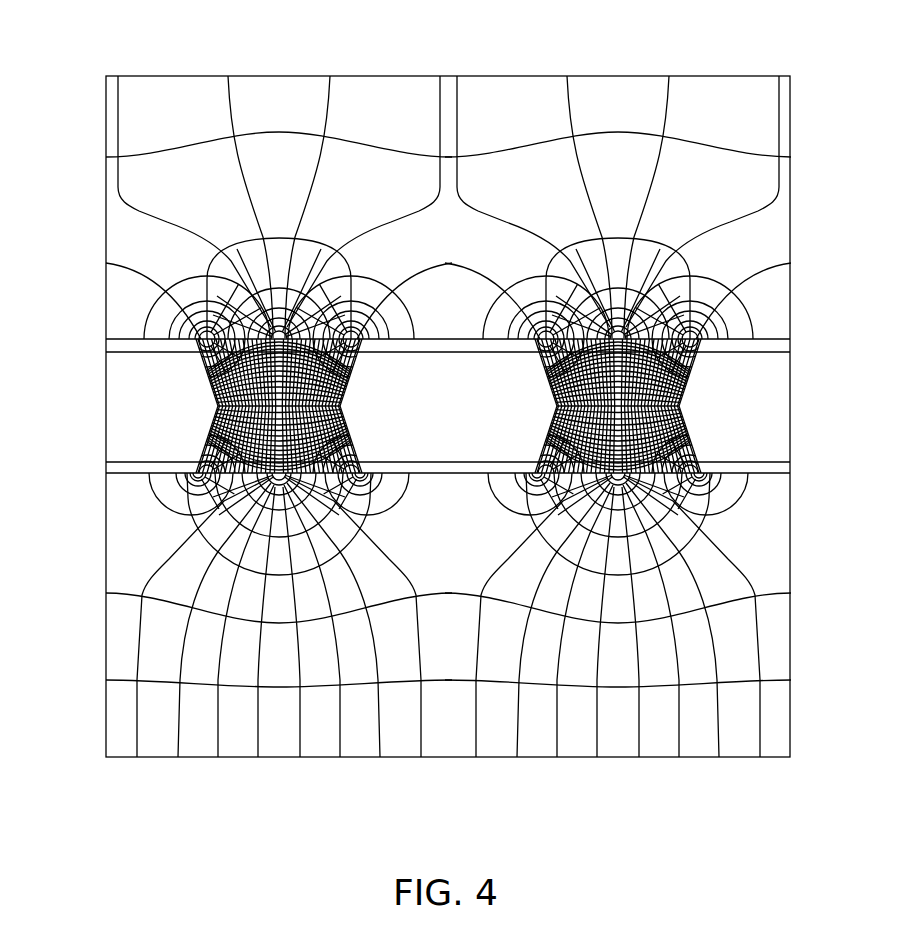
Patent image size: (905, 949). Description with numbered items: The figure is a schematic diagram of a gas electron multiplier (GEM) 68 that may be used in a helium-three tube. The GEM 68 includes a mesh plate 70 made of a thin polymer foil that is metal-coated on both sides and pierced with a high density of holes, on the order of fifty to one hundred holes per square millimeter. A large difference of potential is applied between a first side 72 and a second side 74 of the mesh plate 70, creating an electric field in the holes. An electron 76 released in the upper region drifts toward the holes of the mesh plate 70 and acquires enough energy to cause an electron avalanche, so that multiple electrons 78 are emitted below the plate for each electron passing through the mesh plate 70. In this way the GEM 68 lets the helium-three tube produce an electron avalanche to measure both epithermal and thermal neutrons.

The gas electron multiplier 68 is at (444, 387).
The mesh plate 70 is at (765, 418).
The first side 72 is at (790, 341).
The second side 74 is at (790, 463).
The electron 76 is at (128, 200).
The electrons 78 is at (137, 657).